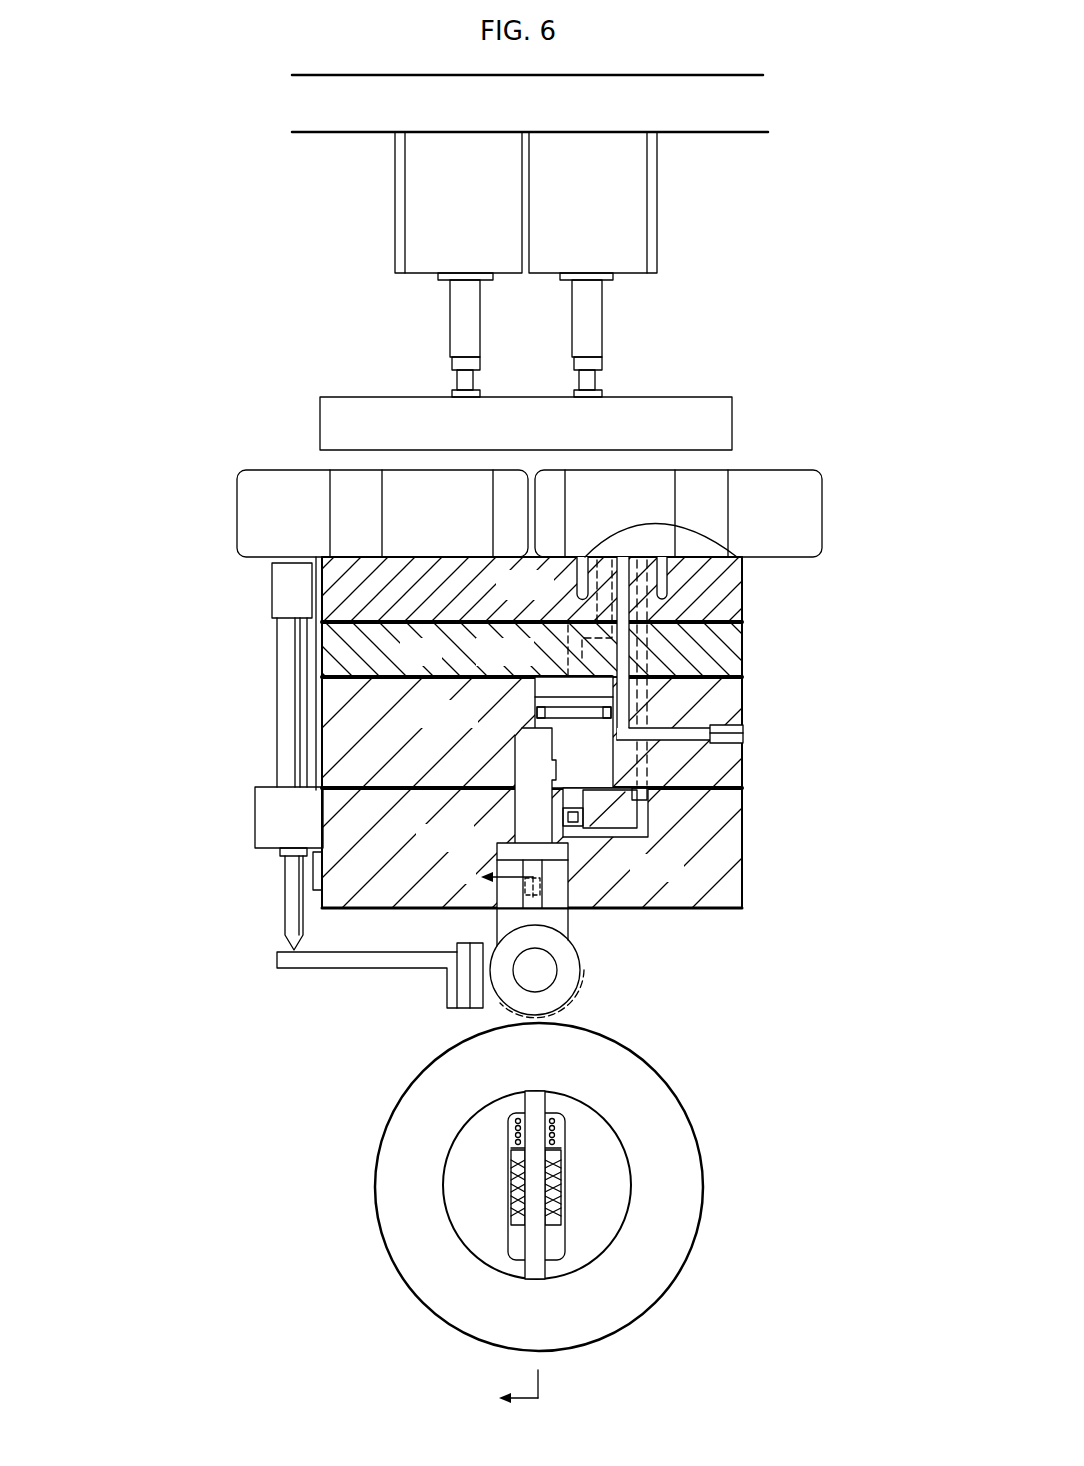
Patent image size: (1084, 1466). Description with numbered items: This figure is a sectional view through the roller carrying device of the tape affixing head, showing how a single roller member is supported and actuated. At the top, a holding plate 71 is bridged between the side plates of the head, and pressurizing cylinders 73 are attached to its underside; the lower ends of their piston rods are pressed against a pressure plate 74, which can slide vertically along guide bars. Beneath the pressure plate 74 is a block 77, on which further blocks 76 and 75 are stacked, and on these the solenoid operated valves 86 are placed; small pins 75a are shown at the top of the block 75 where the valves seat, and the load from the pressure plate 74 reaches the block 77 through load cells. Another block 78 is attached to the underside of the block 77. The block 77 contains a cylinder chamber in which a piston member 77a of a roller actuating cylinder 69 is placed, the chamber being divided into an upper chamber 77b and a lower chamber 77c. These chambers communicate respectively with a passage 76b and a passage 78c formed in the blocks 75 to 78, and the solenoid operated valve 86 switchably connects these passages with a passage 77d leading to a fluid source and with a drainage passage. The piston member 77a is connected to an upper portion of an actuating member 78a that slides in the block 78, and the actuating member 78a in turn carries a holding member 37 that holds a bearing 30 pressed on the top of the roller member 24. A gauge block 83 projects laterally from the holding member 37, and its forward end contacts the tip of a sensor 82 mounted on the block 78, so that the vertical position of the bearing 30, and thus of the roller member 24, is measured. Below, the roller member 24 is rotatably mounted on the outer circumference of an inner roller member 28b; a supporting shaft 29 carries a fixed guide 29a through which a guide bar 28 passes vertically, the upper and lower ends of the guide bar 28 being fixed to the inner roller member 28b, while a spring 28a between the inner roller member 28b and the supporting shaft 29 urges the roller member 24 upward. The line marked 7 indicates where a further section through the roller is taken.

The holding plate 71 is at (728, 120).
The pressurizing cylinders 73 is at (432, 235).
The pressure plate 74 is at (722, 438).
The solenoid operated valves 86 is at (276, 492).
The sensor 82 is at (290, 730).
The gauge block 83 is at (266, 960).
The block 75 is at (752, 605).
The locating pins 75a is at (662, 570).
The block 76 is at (752, 657).
The passage 76b is at (578, 642).
The block 77 is at (752, 700).
The piston member 77a is at (528, 702).
The upper chamber 77b is at (562, 645).
The lower chamber 77c is at (578, 838).
The passage 77d is at (680, 760).
The roller actuating cylinder 69 is at (518, 686).
The block 78 is at (752, 818).
The actuating member 78a is at (528, 830).
The passage 78c is at (743, 866).
The holding member 37 is at (575, 923).
The bearing 30 is at (590, 970).
The section line VII-VII 7 is at (494, 1135).
The roller members 24 is at (640, 1296).
The guide bar 28 is at (545, 1247).
The spring 28a is at (560, 1118).
The inner roller member 28b is at (610, 1205).
The supporting shaft 29 is at (565, 1165).
The guide 29a is at (565, 1188).